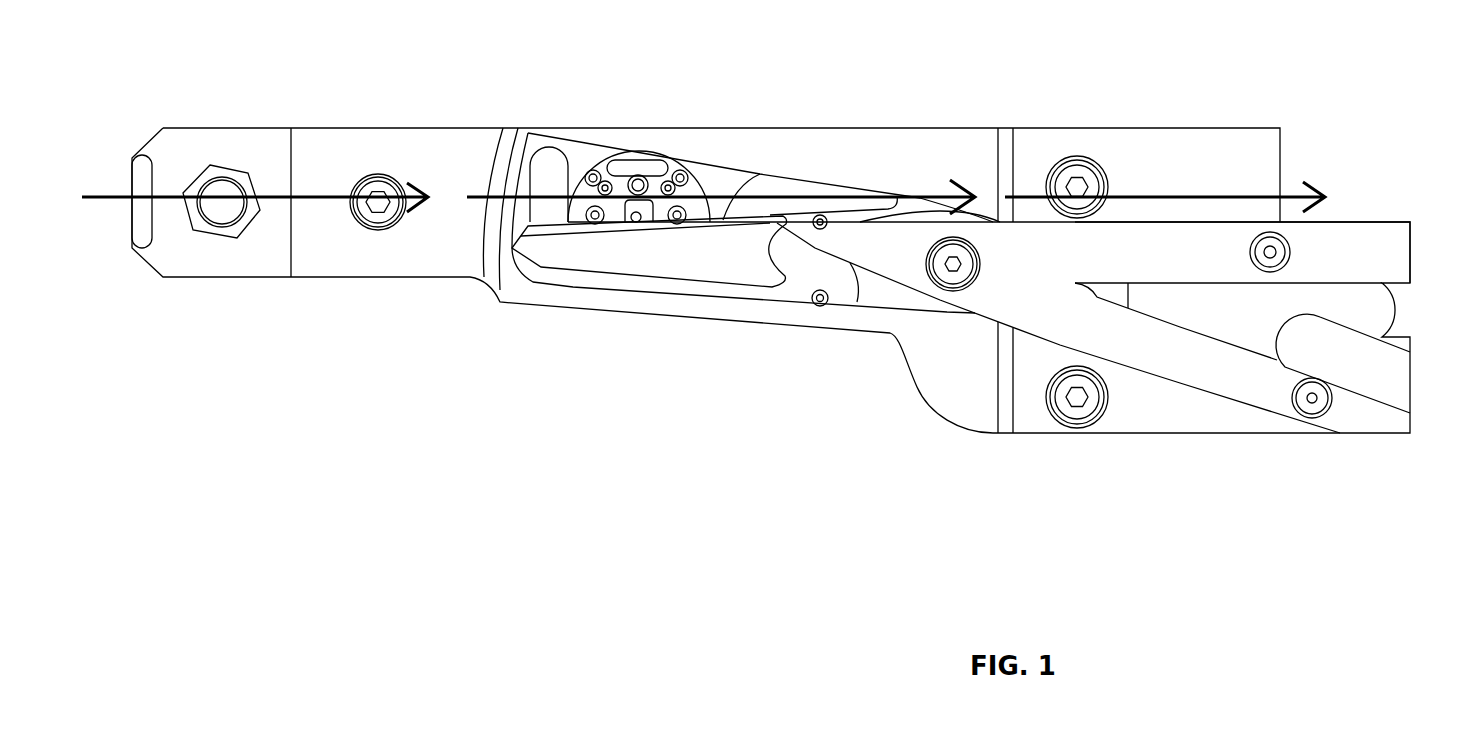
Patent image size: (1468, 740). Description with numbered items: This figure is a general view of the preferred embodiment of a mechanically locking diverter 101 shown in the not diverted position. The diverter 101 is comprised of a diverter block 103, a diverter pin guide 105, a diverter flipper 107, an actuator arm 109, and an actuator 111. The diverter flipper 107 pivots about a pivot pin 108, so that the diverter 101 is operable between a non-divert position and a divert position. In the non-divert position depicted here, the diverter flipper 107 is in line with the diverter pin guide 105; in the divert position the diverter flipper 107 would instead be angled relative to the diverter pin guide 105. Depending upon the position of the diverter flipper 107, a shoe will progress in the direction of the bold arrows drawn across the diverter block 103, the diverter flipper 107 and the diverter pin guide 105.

The mechanically locking diverter 101 is at (771, 240).
The diverter block 103 is at (340, 277).
The diverter pin guide 105 is at (1352, 222).
The diverter flipper 107 is at (742, 257).
The pivot pin 108 is at (953, 262).
The actuator arm 109 is at (643, 203).
The actuator 111 is at (636, 217).